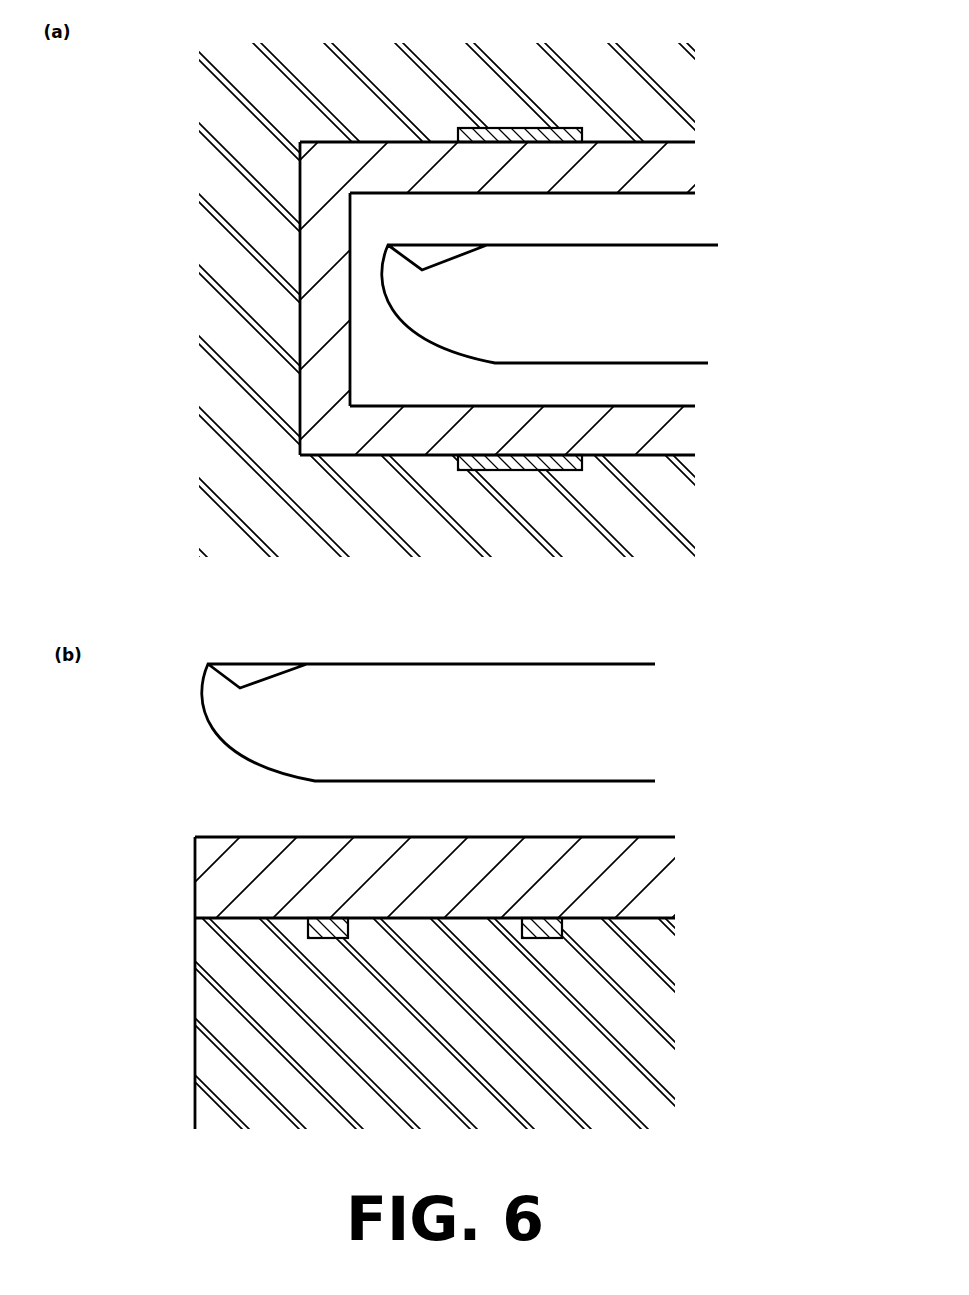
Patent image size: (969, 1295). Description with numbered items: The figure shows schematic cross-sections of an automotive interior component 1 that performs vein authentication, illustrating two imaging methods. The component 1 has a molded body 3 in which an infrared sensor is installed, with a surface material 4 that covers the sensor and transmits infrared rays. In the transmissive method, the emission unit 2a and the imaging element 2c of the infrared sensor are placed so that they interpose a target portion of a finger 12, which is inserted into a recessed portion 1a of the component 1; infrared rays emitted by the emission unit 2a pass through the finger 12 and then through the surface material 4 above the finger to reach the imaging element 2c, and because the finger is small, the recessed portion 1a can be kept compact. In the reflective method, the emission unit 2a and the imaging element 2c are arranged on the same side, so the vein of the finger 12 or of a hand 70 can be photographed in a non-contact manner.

The automotive interior component 1 is at (159, 139).
The recessed portion 1a is at (665, 224).
The emission unit 2a is at (582, 466).
The imaging element 2c is at (582, 132).
The molded body 3 is at (600, 65).
The surface material 4 is at (665, 177).
The finger 12 is at (515, 513).
The hand 70 is at (428, 722).